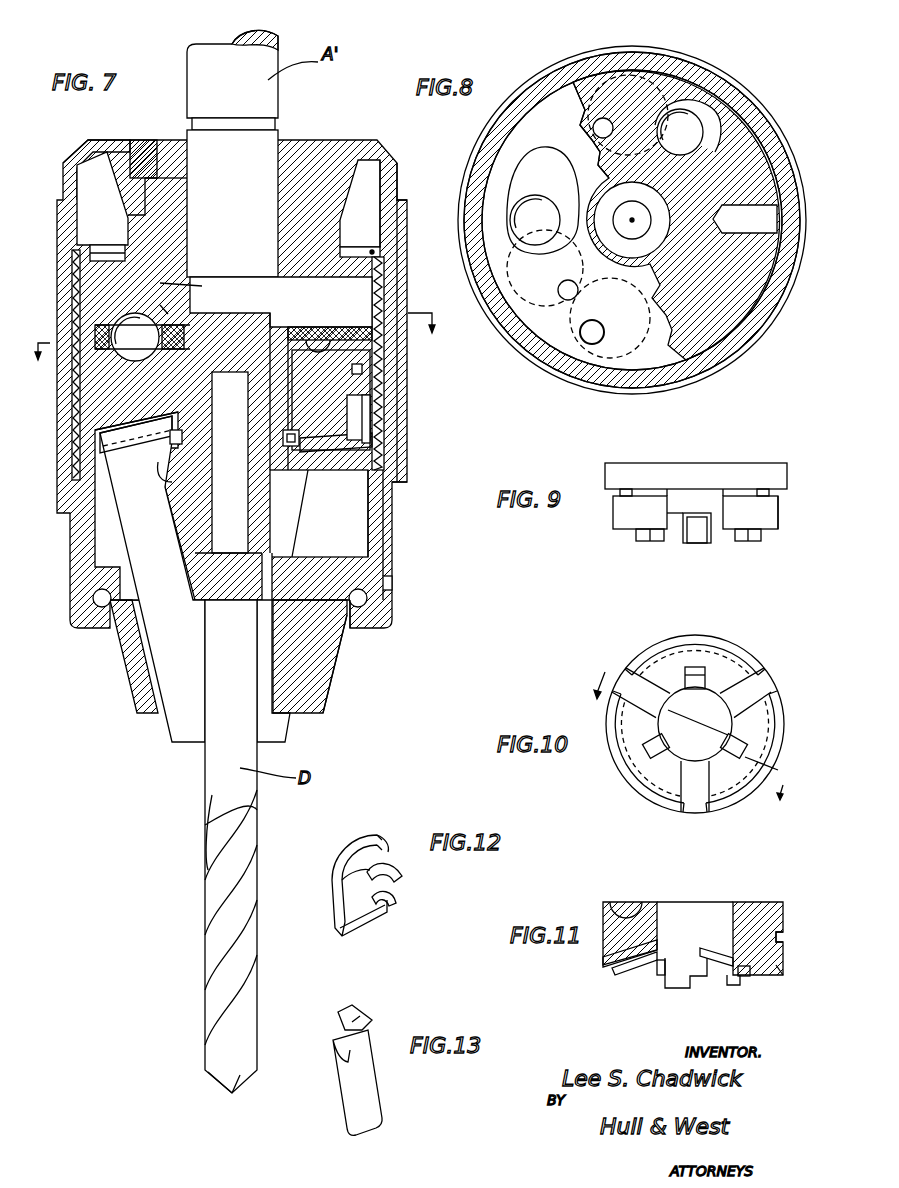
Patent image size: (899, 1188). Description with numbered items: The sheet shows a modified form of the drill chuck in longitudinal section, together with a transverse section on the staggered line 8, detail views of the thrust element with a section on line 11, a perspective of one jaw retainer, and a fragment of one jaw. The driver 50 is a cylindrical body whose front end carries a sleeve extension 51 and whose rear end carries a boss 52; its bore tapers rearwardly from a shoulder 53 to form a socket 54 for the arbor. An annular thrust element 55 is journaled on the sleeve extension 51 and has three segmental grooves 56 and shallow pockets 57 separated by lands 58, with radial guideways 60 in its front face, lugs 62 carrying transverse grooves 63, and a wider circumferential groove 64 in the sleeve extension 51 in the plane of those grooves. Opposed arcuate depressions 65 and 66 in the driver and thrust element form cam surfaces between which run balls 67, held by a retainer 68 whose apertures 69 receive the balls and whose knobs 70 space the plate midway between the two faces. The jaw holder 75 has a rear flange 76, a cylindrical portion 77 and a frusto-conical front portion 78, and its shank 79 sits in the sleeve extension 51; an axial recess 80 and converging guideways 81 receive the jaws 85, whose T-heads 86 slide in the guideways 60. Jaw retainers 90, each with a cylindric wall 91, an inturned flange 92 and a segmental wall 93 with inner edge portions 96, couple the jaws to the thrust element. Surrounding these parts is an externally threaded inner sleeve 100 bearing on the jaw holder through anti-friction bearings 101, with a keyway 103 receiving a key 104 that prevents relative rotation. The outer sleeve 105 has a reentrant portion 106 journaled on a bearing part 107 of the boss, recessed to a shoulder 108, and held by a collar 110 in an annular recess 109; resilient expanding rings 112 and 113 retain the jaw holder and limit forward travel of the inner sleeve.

In FIG. 7, the section line 8 is at (234, 323).
In FIG. 10, the section line 11 is at (699, 727).
In FIG. 7, the driver 50 is at (333, 241).
In FIG. 7, the sleeve extension 51 is at (280, 393).
In FIG. 7, the boss 52 is at (296, 172).
In FIG. 7, the shoulder 53 is at (207, 320).
In FIG. 7, the socket 54 is at (171, 281).
In FIG. 7, the thrust element 55 is at (398, 354).
In FIG. 9, the thrust element 55 is at (700, 468).
In FIG. 11, the thrust element 55 is at (748, 901).
In FIG. 9, the segmental grooves 56 is at (625, 493).
In FIG. 11, the segmental grooves 56 is at (782, 935).
In FIG. 9, the segmental pockets 57 is at (781, 522).
In FIG. 10, the segmental pockets 57 is at (710, 643).
In FIG. 11, the segmental pockets 57 is at (780, 960).
In FIG. 9, the lands 58 is at (705, 510).
In FIG. 10, the lands 58 is at (737, 690).
In FIG. 11, the lands 58 is at (605, 957).
In FIG. 7, the radial guideways 60 is at (97, 441).
In FIG. 9, the radial guideways 60 is at (690, 514).
In FIG. 10, the radial guideways 60 is at (646, 688).
In FIG. 11, the radial guideways 60 is at (618, 970).
In FIG. 7, the lugs 62 is at (302, 458).
In FIG. 9, the lugs 62 is at (688, 542).
In FIG. 11, the lugs 62 is at (675, 978).
In FIG. 9, the transverse grooves 63 is at (634, 540).
In FIG. 11, the transverse grooves 63 is at (653, 975).
In FIG. 7, the circumferential groove 64 is at (160, 466).
In FIG. 7, the arcuate depressions 65 is at (154, 301).
In FIG. 7, the arcuate depressions 66 is at (140, 362).
In FIG. 8, the arcuate depressions 66 is at (676, 58).
In FIG. 11, the arcuate depressions 66 is at (638, 903).
In FIG. 7, the balls 67 is at (220, 337).
In FIG. 8, the balls 67 is at (692, 126).
In FIG. 8, the retainer 68 is at (568, 66).
In FIG. 8, the apertures 69 is at (665, 135).
In FIG. 8, the knobs 70 is at (594, 132).
In FIG. 7, the jaw holder 75 is at (320, 657).
In FIG. 7, the rear flange 76 is at (392, 583).
In FIG. 7, the cylindrical portion 77 is at (382, 630).
In FIG. 7, the frusto-conical front portion 78 is at (333, 695).
In FIG. 7, the cylindrical shank 79 is at (258, 515).
In FIG. 7, the axial recess 80 is at (282, 576).
In FIG. 7, the guideways 81 is at (140, 658).
In FIG. 7, the jaws 85 is at (327, 520).
In FIG. 13, the jaws 85 is at (380, 1093).
In FIG. 7, the T-heads 86 is at (136, 428).
In FIG. 13, the T-heads 86 is at (360, 1014).
In FIG. 7, the jaw retainers 90 is at (370, 415).
In FIG. 12, the jaw retainers 90 is at (335, 860).
In FIG. 7, the cylindric wall 91 is at (372, 424).
In FIG. 12, the cylindric wall 91 is at (331, 907).
In FIG. 7, the inturned flange 92 is at (358, 374).
In FIG. 12, the inturned flange 92 is at (372, 843).
In FIG. 7, the segmental wall 93 is at (328, 452).
In FIG. 12, the segmental wall 93 is at (368, 870).
In FIG. 7, the inner edge portions 96 is at (180, 437).
In FIG. 12, the inner edge portions 96 is at (404, 877).
In FIG. 7, the inner sleeve 100 is at (392, 550).
In FIG. 7, the anti-friction bearings 101 is at (370, 604).
In FIG. 7, the keyway 103 is at (378, 272).
In FIG. 7, the key 104 is at (403, 333).
In FIG. 7, the outer sleeve 105 is at (393, 185).
In FIG. 7, the reentrant portion 106 is at (112, 190).
In FIG. 7, the bearing part 107 is at (148, 205).
In FIG. 7, the shoulder 108 is at (160, 180).
In FIG. 7, the annular recess 109 is at (118, 142).
In FIG. 7, the collar 110 is at (143, 150).
In FIG. 7, the resilient expanding ring 112 is at (352, 566).
In FIG. 7, the resilient expanding ring 113 is at (117, 254).